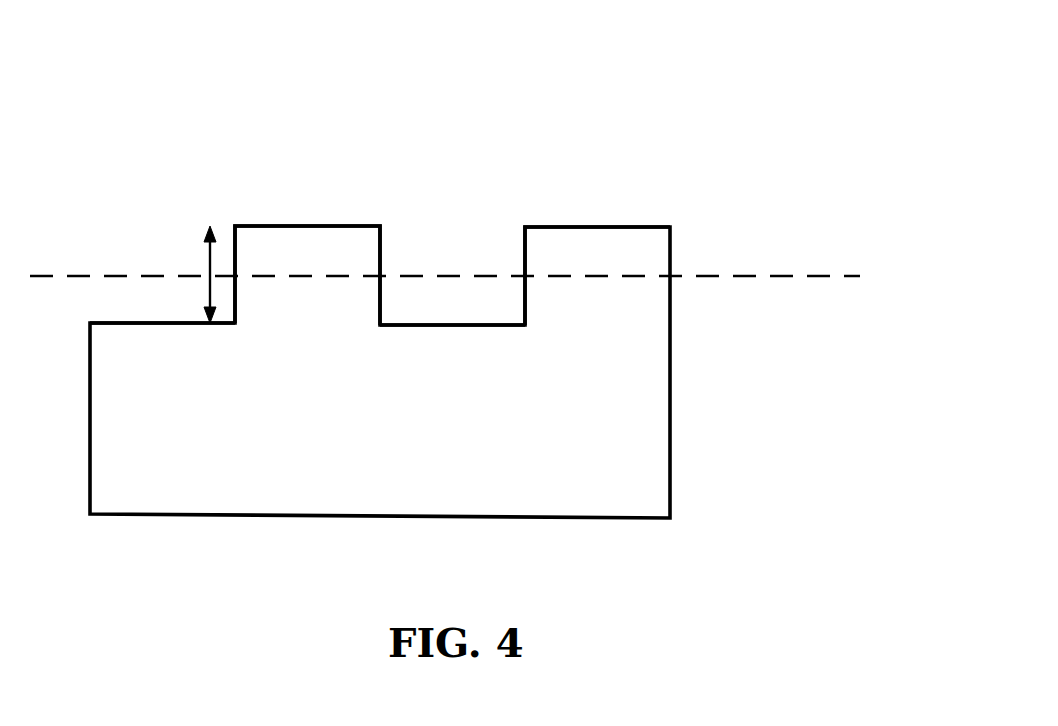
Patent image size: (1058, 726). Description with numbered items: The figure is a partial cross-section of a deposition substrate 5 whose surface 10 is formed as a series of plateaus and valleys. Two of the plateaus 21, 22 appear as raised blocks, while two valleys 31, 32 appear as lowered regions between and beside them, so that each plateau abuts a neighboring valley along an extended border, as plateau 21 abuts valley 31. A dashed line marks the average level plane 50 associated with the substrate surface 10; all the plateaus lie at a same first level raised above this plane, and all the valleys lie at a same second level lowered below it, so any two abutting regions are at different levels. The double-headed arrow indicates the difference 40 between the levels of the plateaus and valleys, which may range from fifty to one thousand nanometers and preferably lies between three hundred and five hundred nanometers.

The surface 10 is at (452, 112).
The deposition substrate 5 is at (669, 417).
The plateau 21 is at (283, 225).
The plateau 22 is at (600, 227).
The valley 31 is at (147, 323).
The valley 32 is at (433, 325).
The difference between the levels of the plateaus and valleys 40 is at (207, 246).
The average level plane 50 is at (768, 277).